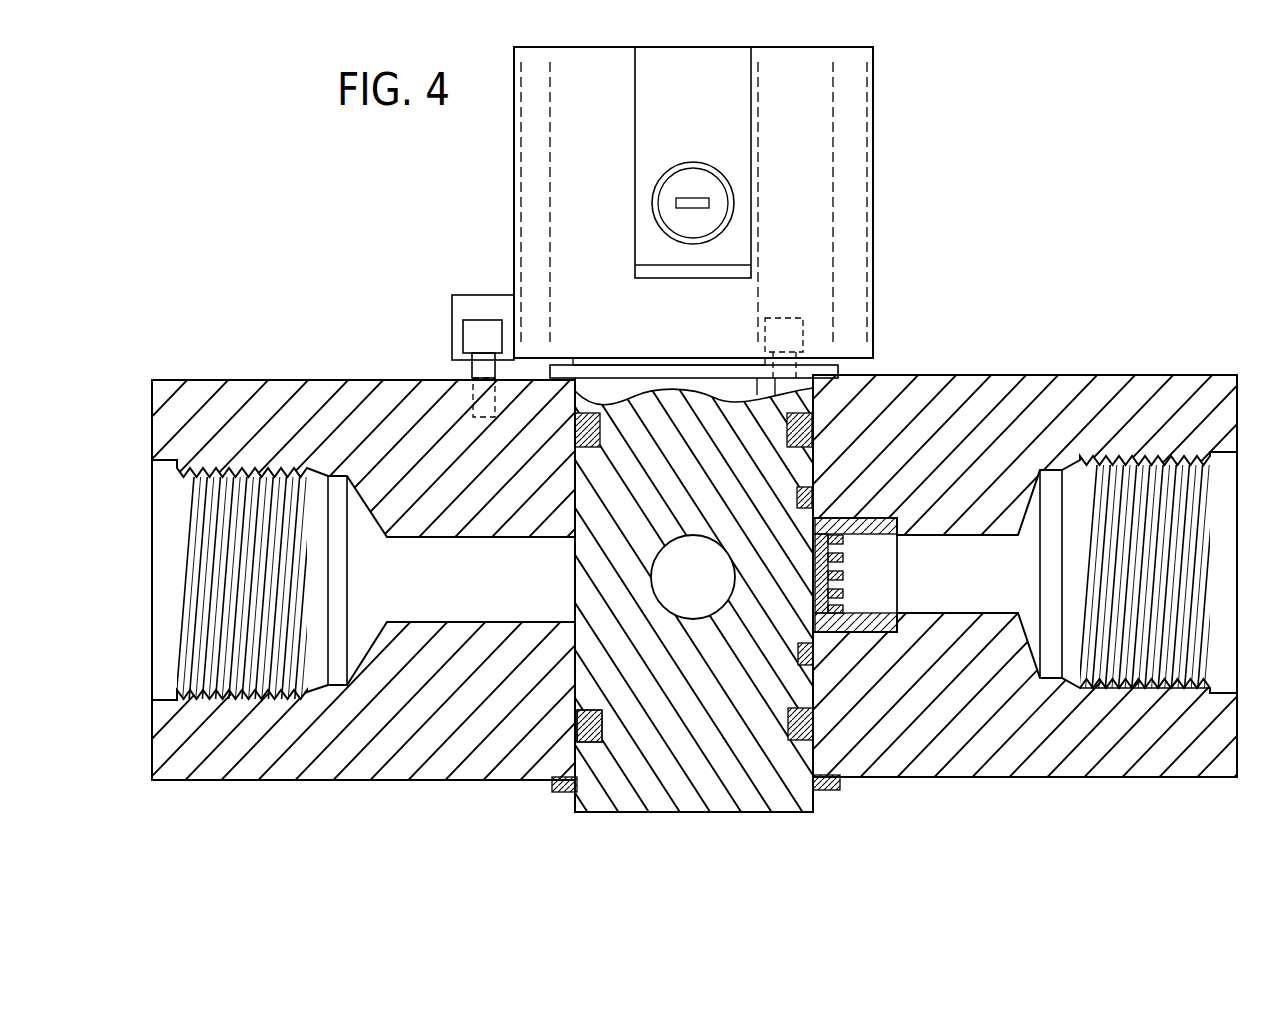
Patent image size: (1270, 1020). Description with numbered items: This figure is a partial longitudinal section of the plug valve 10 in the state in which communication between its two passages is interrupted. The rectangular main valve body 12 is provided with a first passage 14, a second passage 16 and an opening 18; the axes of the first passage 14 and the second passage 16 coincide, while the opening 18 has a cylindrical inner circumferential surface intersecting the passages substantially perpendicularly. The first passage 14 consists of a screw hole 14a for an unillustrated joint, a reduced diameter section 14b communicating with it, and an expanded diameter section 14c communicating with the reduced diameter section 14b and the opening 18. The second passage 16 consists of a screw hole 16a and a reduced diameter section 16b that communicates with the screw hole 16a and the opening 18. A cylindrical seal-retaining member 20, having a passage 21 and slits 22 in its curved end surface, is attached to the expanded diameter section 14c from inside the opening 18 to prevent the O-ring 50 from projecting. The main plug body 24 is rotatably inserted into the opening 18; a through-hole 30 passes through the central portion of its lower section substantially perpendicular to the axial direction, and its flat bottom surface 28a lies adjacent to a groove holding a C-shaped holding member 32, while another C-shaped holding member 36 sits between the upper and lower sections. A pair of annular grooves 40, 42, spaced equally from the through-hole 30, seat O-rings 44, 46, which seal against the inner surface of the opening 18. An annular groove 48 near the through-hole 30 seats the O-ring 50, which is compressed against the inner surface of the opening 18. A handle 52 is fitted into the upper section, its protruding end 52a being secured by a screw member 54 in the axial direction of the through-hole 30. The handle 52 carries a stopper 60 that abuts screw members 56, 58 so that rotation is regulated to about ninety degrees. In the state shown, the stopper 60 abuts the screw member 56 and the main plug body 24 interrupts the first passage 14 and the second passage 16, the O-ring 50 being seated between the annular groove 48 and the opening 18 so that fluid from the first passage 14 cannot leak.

The valve assembly 10 is at (1172, 136).
The main valve body 12 is at (1118, 370).
The first passage 14 is at (1152, 457).
The screw hole 14a is at (1170, 685).
The reduced diameter section 14b is at (965, 618).
The expanded diameter section 14c is at (862, 627).
The second passage 16 is at (235, 458).
The screw hole 16a is at (222, 673).
The reduced diameter section 16b is at (424, 618).
The opening 18 is at (770, 400).
The seal-retaining member 20 is at (882, 510).
The passage 21 is at (872, 537).
The slits 22 is at (806, 573).
The main plug body 24 is at (722, 820).
The bottom surface 28a is at (690, 813).
The through-hole 30 is at (693, 577).
The holding member 32 is at (557, 794).
The holding member 36 is at (678, 372).
The annular groove 40 is at (632, 398).
The annular groove 42 is at (604, 727).
The O-ring 44 is at (590, 744).
The O-ring 46 is at (588, 410).
The annular groove 48 is at (798, 652).
The O-ring 50 is at (815, 495).
The handle 52 is at (541, 212).
The protruding end 52a is at (728, 137).
The screw member 54 is at (695, 180).
The screw member 56 is at (470, 340).
The screw member 58 is at (795, 318).
The stopper 60 is at (481, 312).